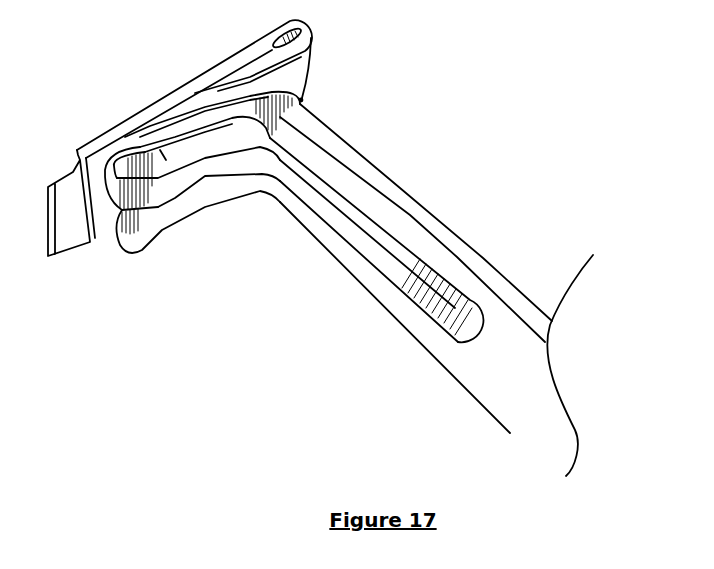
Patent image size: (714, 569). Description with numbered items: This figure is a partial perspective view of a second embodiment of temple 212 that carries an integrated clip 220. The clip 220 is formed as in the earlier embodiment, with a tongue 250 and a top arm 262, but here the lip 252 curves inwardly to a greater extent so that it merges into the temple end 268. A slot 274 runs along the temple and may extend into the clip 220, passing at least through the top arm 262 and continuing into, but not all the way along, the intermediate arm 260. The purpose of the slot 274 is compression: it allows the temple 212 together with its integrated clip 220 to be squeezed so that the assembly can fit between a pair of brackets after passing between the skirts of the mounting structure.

The temple 212 is at (403, 230).
The integrated clip 220 is at (303, 53).
The tongue 250 is at (60, 252).
The lip 252 is at (273, 123).
The intermediate arm 260 is at (170, 157).
The top arm 262 is at (183, 212).
The temple end 268 is at (303, 153).
The slot 274 is at (343, 230).